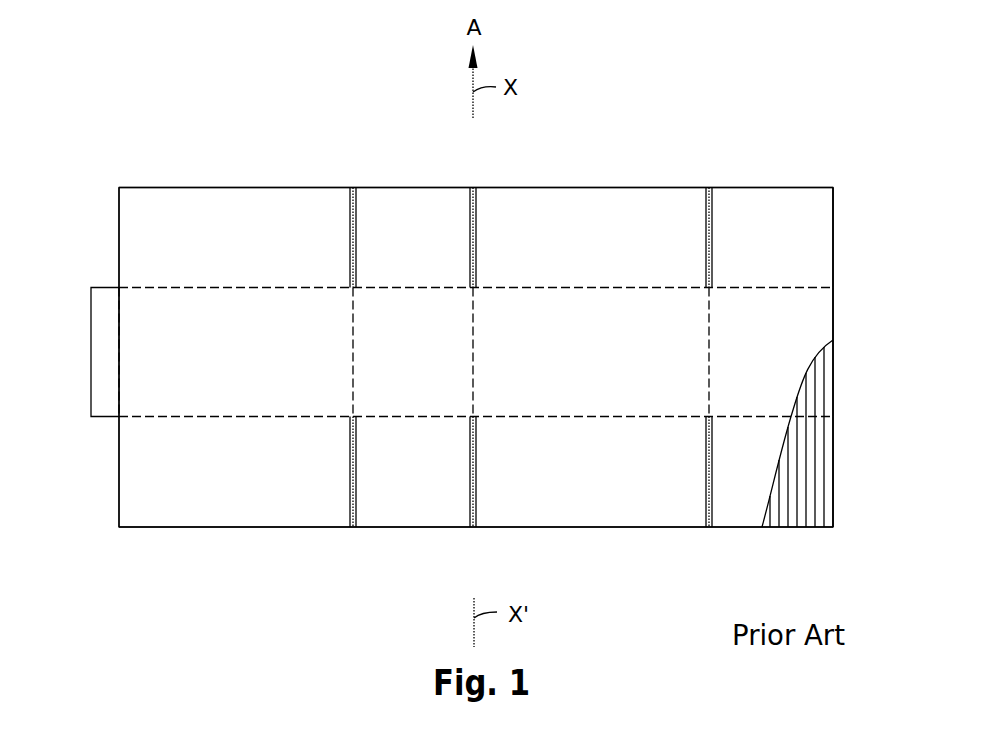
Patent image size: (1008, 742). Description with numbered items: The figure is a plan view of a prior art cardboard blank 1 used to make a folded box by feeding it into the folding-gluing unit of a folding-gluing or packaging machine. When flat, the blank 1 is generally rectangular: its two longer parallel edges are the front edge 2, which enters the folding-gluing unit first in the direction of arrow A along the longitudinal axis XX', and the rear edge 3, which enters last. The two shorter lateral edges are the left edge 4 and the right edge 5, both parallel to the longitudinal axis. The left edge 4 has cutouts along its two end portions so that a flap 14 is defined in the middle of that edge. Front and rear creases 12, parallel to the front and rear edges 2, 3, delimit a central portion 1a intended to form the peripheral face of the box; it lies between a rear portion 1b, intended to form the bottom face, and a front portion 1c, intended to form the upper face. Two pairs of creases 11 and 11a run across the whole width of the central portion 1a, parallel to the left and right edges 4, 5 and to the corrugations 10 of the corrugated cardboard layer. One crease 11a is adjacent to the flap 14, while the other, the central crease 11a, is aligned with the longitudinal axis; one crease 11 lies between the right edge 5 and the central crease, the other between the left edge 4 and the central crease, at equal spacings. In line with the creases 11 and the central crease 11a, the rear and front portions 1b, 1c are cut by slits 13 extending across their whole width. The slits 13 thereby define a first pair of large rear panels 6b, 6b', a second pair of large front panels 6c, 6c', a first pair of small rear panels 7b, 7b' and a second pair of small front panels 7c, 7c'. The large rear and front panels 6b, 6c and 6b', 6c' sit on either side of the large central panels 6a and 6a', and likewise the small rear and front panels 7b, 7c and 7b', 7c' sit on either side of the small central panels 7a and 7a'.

The blank 1 is at (673, 89).
The central portion 1a is at (833, 312).
The rear portion 1b is at (833, 462).
The front portion 1c is at (833, 258).
The front edge 2 is at (223, 187).
The rear edge 3 is at (575, 527).
The left edge 4 is at (119, 224).
The right edge 5 is at (833, 203).
The large central panel 6a is at (236, 352).
The large rear panel 6b is at (234, 472).
The large front panel 6c is at (234, 238).
The large central panel 6a' is at (591, 352).
The large rear panel 6b' is at (591, 472).
The large front panel 6c' is at (591, 238).
The small central panel 7a is at (413, 352).
The small rear panel 7b is at (413, 472).
The small front panel 7c is at (413, 238).
The small central panel 7a' is at (771, 352).
The small rear panel 7b' is at (772, 472).
The small front panel 7c' is at (772, 238).
The corrugations 10 is at (818, 381).
The creases 11 is at (353, 334).
The creases 11a is at (119, 335).
The front and rear creases 12 is at (534, 188).
The slits 13 is at (351, 187).
The flap 14 is at (91, 353).